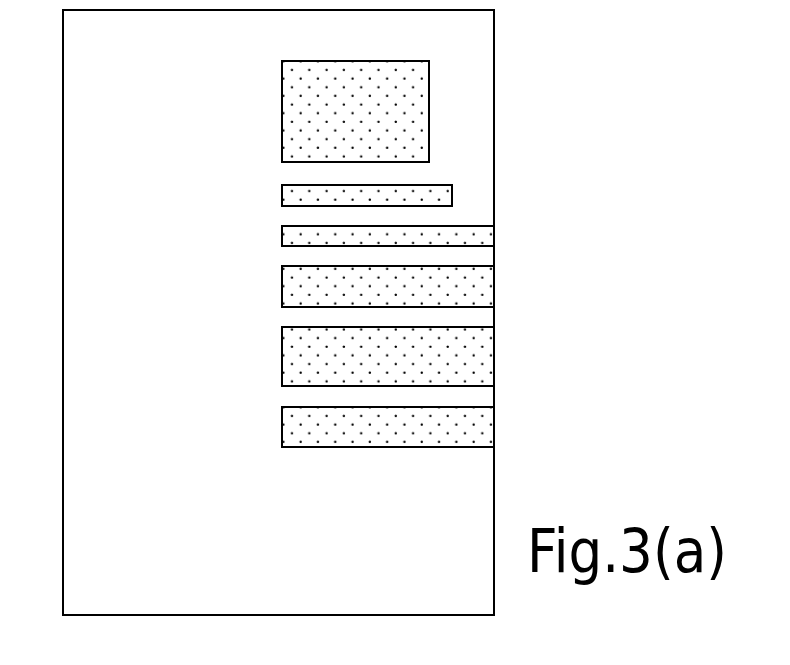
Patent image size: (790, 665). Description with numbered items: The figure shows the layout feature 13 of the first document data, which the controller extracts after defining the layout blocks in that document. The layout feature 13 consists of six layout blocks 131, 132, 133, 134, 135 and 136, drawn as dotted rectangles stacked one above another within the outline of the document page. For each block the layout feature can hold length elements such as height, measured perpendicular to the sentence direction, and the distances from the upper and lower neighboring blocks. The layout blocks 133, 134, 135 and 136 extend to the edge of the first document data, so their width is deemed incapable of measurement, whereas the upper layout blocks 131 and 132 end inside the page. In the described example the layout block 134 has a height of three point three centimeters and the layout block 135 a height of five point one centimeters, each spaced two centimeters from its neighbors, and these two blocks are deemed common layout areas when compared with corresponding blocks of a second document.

The layout feature of the first document data 13 is at (540, 150).
The layout block 131 is at (405, 114).
The layout block 132 is at (282, 192).
The layout block 133 is at (448, 235).
The layout block 134 is at (447, 295).
The layout block 135 is at (447, 376).
The layout block 136 is at (447, 437).